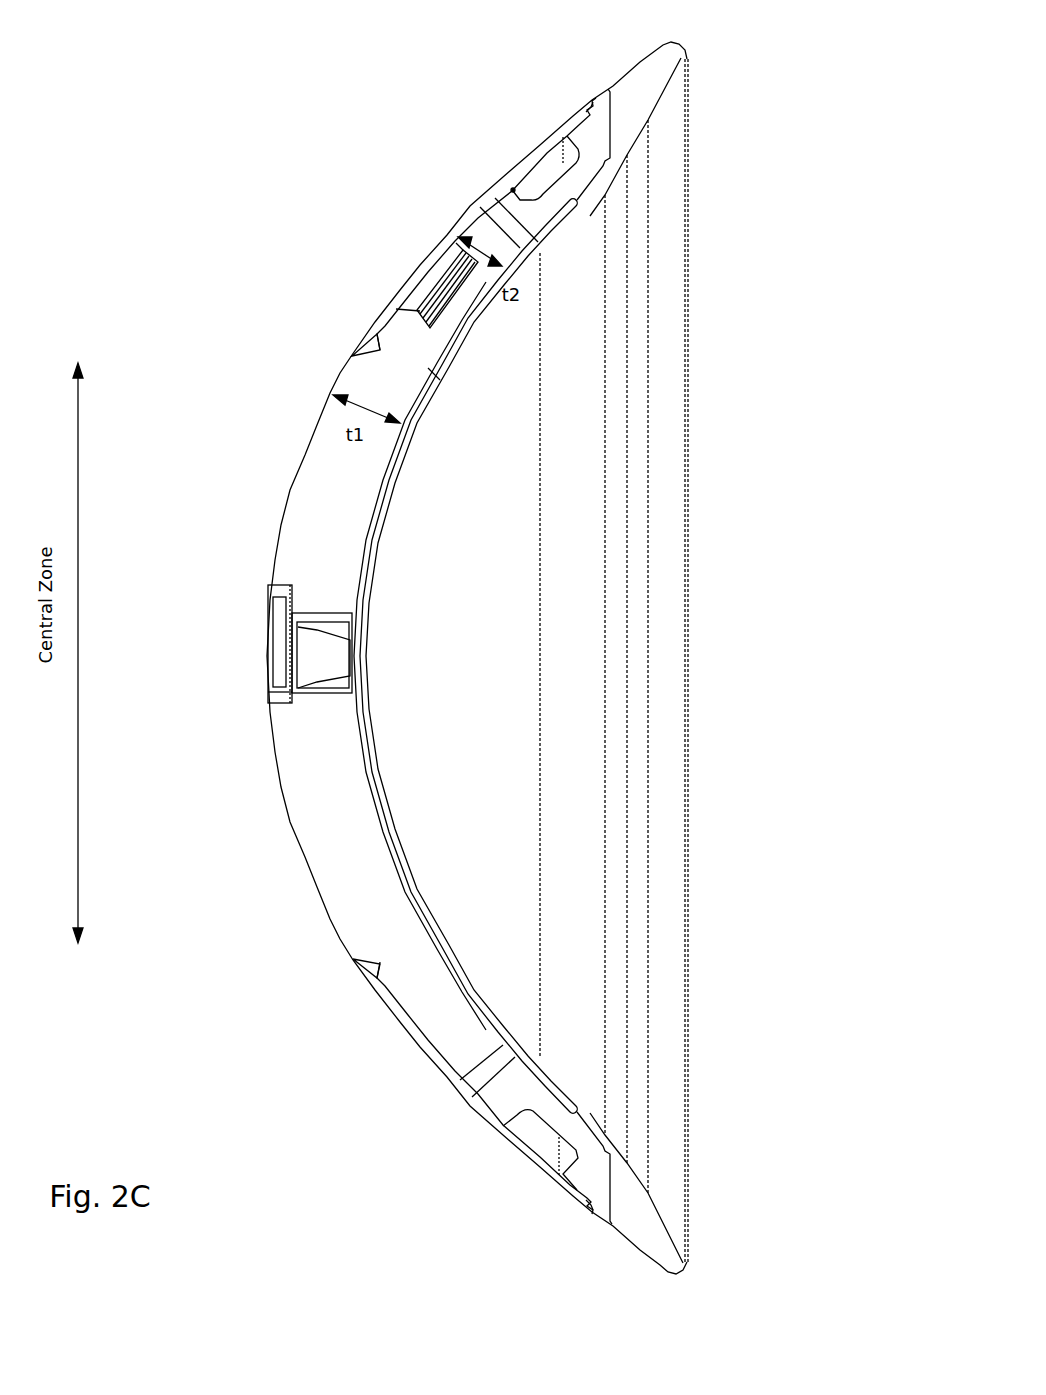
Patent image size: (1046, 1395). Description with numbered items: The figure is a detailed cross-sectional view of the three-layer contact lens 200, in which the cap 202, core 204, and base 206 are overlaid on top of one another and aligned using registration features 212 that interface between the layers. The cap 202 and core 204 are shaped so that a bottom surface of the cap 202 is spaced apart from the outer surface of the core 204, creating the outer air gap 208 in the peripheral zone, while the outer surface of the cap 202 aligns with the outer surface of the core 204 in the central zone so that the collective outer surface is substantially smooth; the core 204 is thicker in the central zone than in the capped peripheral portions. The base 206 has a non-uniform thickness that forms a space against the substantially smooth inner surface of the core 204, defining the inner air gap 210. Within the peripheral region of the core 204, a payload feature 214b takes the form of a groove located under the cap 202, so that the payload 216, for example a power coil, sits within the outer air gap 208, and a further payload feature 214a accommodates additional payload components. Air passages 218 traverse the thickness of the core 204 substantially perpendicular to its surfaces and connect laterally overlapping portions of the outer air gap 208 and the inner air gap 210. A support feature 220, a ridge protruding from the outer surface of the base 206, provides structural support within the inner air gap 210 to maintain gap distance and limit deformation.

The three-layer contact lens 200 is at (808, 1175).
The cap 202 is at (360, 346).
The core 204 is at (290, 490).
The base 206 is at (652, 87).
The outer air gap 208 is at (458, 233).
The inner air gap 210 is at (553, 218).
The registration features 212 is at (588, 108).
The payload feature 214a is at (300, 667).
The payload feature 214b is at (546, 178).
The payload component 216 is at (420, 310).
The air passage 218 is at (483, 212).
The support feature 220 is at (433, 370).